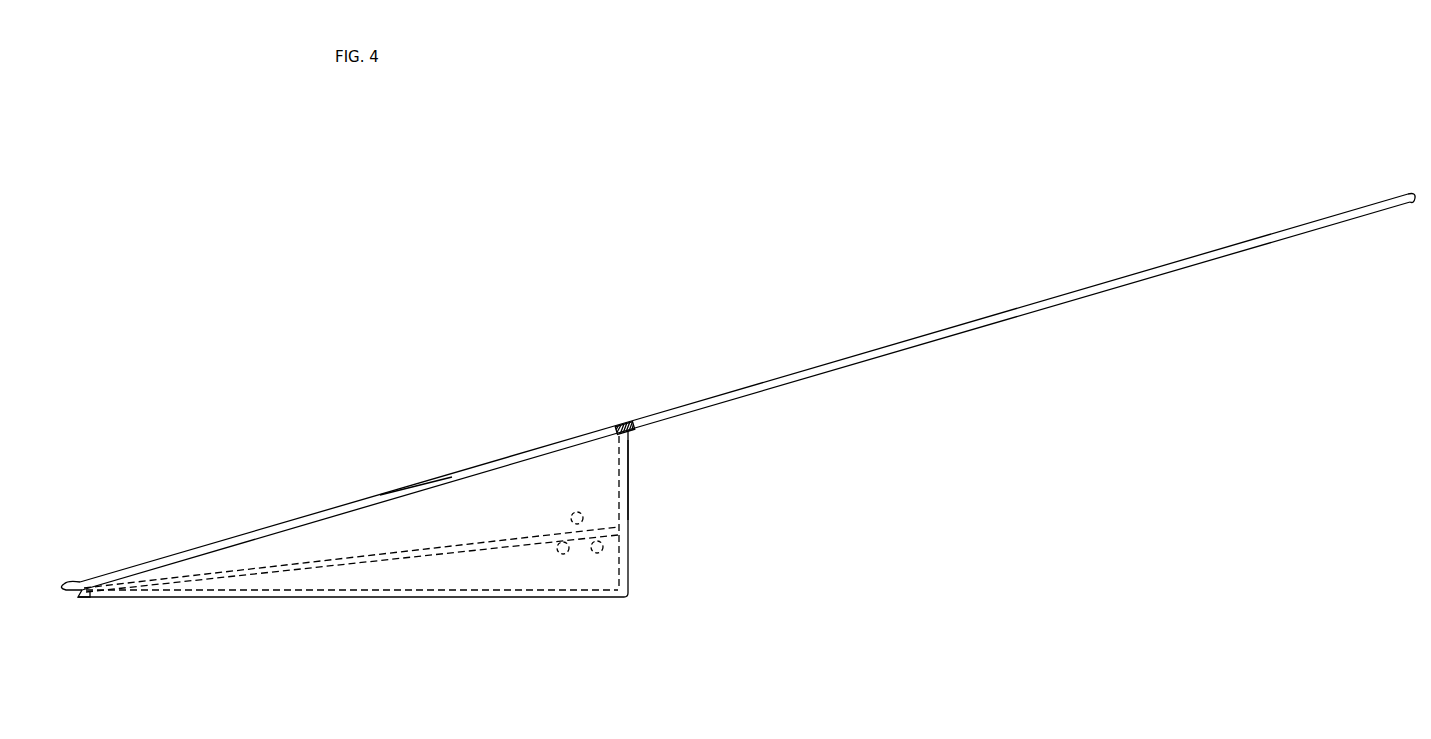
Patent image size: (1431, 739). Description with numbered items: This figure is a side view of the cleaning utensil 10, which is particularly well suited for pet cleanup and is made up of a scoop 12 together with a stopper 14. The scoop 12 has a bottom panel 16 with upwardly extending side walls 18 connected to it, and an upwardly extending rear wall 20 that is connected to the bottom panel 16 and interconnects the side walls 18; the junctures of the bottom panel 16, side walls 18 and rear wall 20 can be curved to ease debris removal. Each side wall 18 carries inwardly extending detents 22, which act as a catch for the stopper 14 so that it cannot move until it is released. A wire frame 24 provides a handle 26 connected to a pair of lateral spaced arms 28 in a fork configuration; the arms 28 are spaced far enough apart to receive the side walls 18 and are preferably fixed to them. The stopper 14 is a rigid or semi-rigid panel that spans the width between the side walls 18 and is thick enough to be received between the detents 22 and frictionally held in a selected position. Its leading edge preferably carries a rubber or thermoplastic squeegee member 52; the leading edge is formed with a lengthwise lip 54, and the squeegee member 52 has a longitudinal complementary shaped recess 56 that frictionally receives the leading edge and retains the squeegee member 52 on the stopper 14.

The cleaning utensil 10 is at (665, 297).
The scoop 12 is at (608, 428).
The stopper 14 is at (388, 551).
The bottom panel 16 is at (470, 593).
The side walls 18 is at (537, 490).
The rear wall 20 is at (628, 479).
The detents 22 is at (602, 553).
The wire frame 24 is at (624, 424).
The handle 26 is at (1063, 294).
The arms 28 is at (452, 477).
The squeegee member 52 is at (85, 594).
The lip 54 is at (62, 588).
The recess 56 is at (79, 579).